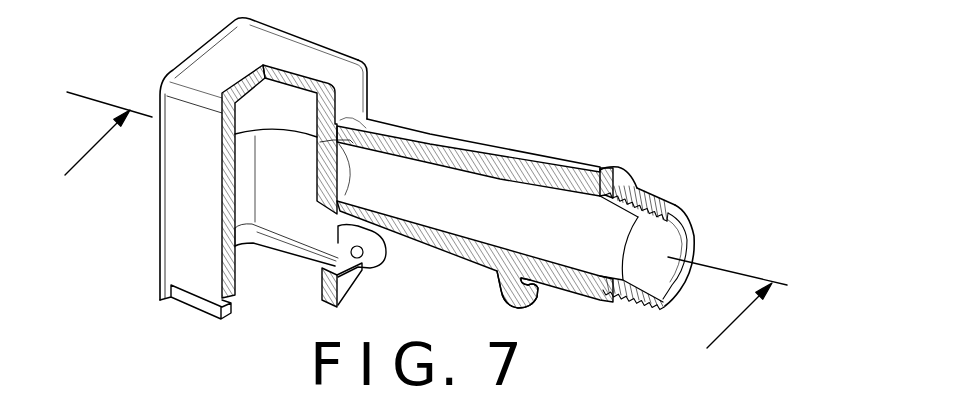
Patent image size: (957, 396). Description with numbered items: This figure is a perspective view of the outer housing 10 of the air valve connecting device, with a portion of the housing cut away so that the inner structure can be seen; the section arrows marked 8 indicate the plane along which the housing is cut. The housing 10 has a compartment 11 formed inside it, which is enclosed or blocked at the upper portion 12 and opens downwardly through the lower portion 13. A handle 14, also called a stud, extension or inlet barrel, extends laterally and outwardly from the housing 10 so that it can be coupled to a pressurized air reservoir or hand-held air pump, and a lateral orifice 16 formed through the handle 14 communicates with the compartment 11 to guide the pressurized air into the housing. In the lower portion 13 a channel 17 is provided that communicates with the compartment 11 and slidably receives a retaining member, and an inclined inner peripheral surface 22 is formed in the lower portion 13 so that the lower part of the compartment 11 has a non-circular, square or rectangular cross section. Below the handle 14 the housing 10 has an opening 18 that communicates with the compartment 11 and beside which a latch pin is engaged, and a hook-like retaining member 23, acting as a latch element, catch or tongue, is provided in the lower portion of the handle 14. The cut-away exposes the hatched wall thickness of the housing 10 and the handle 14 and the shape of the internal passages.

The section line 8- 8 is at (422, 238).
The outer housing 10 is at (340, 50).
The compartment 11 is at (274, 101).
The upper portion 12 is at (213, 53).
The lower portion 13 is at (170, 247).
The handle 14 is at (518, 157).
The lateral orifice 16 is at (335, 138).
The channel 17 is at (192, 302).
The opening 18 is at (343, 275).
The inclined inner peripheral surface 22 is at (285, 217).
The retaining member 23 is at (525, 306).